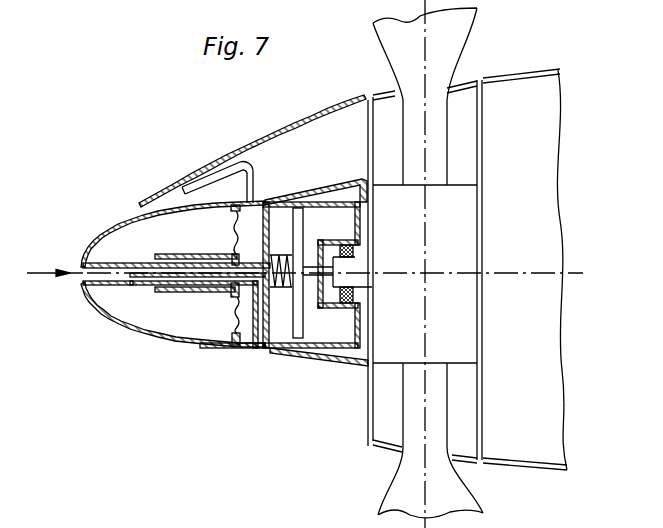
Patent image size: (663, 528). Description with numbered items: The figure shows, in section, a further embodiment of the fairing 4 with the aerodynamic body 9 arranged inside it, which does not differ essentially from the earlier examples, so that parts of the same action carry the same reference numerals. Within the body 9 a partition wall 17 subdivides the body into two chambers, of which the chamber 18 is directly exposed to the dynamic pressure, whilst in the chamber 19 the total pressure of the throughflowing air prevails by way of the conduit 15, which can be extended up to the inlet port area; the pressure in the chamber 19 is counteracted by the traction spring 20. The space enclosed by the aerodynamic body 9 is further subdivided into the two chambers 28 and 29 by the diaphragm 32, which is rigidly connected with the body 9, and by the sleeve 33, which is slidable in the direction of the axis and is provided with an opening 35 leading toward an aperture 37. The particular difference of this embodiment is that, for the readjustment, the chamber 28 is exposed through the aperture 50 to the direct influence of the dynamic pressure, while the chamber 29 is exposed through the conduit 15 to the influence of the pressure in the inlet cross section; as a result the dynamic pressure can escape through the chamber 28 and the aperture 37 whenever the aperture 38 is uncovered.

The fairing 4 is at (280, 126).
The conduit 15 is at (208, 180).
The chamber 18 is at (279, 222).
The chamber 19 is at (323, 225).
The traction spring 20 is at (293, 259).
The diaphragm 32 is at (240, 240).
The sleeve 33 is at (176, 265).
The aperture 38 is at (177, 283).
The opening 35 is at (193, 287).
The aperture 50 is at (92, 285).
The aerodynamic body 9 is at (105, 314).
The chamber 28 is at (147, 313).
The chamber 29 is at (237, 342).
The aperture 37 is at (265, 337).
The partition wall 17 is at (298, 342).